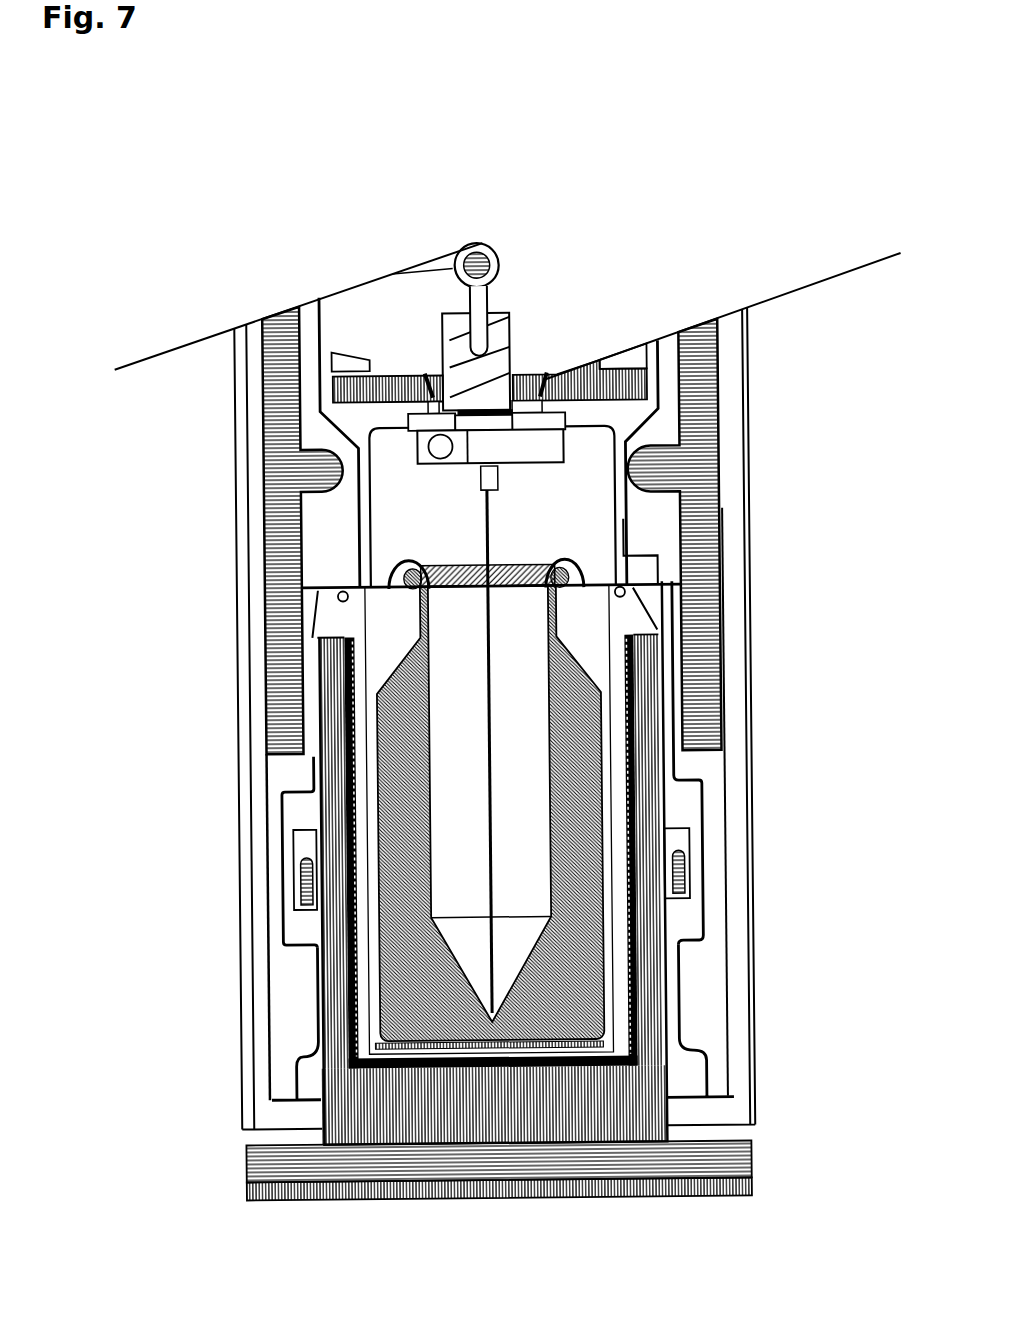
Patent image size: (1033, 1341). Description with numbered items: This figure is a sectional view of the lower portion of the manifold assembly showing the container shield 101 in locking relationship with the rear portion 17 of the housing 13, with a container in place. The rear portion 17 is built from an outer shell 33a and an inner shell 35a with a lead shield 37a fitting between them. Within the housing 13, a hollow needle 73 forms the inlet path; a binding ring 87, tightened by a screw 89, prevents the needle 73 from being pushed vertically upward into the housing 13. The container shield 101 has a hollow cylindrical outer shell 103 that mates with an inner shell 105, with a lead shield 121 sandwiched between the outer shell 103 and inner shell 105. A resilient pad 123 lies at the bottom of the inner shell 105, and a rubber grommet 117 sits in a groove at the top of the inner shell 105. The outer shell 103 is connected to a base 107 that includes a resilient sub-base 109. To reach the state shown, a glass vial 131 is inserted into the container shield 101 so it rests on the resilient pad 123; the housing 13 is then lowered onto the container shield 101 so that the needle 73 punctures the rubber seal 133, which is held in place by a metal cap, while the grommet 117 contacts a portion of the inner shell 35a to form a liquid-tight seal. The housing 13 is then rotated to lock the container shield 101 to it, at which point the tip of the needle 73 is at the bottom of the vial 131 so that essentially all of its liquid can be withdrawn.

The housing 13 is at (770, 514).
The rear portion 17 is at (752, 598).
The outer shell 33a is at (749, 372).
The inner shell 35a is at (320, 441).
The lead shield 37a is at (712, 441).
The hollow needle 73 is at (347, 762).
The binding ring 87 is at (520, 440).
The screw 89 is at (443, 446).
The container shield 101 is at (622, 1200).
The outer shell 103 is at (667, 832).
The inner shell 105 is at (318, 818).
The base 107 is at (715, 1160).
The resilient sub-base 109 is at (425, 1186).
The rubber grommet 117 is at (628, 598).
The lead shield 121 is at (667, 1015).
The resilient pad 123 is at (315, 1047).
The glass vial 131 is at (417, 572).
The rubber seal 133 is at (423, 560).